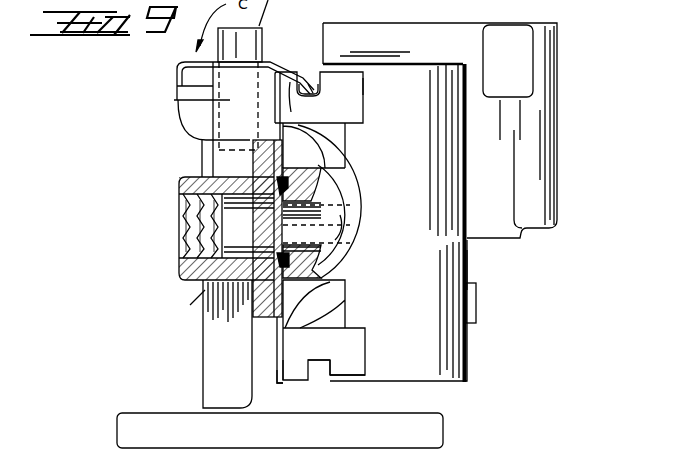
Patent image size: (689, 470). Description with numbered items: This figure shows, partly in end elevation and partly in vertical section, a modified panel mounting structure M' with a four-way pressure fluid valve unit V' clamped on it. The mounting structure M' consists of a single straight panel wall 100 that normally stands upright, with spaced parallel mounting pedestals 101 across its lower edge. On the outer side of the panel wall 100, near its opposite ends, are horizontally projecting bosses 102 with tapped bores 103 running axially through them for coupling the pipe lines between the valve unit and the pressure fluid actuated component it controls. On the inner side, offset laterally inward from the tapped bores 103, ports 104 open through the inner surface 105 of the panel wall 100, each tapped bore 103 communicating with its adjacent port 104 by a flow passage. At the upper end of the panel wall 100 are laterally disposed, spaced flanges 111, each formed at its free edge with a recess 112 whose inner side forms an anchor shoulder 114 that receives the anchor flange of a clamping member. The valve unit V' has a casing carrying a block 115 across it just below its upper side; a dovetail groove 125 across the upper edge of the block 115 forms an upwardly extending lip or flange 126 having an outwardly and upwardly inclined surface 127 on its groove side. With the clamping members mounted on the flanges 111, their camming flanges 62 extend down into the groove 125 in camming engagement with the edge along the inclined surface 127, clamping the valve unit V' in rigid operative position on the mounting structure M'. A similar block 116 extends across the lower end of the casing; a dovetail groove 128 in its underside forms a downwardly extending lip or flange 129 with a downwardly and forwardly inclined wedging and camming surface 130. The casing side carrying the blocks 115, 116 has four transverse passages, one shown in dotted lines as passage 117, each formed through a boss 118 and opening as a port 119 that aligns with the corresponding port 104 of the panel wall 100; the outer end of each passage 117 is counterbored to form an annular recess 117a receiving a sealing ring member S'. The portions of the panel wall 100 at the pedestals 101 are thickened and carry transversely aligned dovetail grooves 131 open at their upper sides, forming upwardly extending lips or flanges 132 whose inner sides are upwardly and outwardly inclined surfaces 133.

The camming and clamping flange 62 is at (254, 45).
The panel wall 100 is at (268, 290).
The mounting pedestals 101 is at (448, 343).
The bosses 102 is at (180, 187).
The tapped bores 103 is at (192, 238).
The ports 104 is at (249, 225).
The inner surface 105 is at (273, 273).
The flanges 111 is at (180, 103).
The recess 112 is at (180, 90).
The anchor shoulder 114 is at (178, 72).
The block 115 is at (347, 107).
The block 116 is at (345, 358).
The passage 117 is at (328, 196).
The annular recess 117a is at (318, 258).
The boss 118 is at (345, 161).
The port 119 is at (328, 218).
The dovetail groove 125 is at (313, 92).
The lip or flange 126 is at (309, 103).
The inclined surface 127 is at (363, 86).
The dovetail groove 128 is at (356, 338).
The lip or flange 129 is at (290, 377).
The wedging and camming surface 130 is at (340, 324).
The dovetail grooves 131 is at (275, 384).
The lips or flanges 132 is at (333, 388).
The inclined surfaces 133 is at (310, 386).
The mounting structure M' is at (162, 312).
The sealing ring member S' is at (356, 228).
The pressure fluid valve unit V' is at (505, 270).